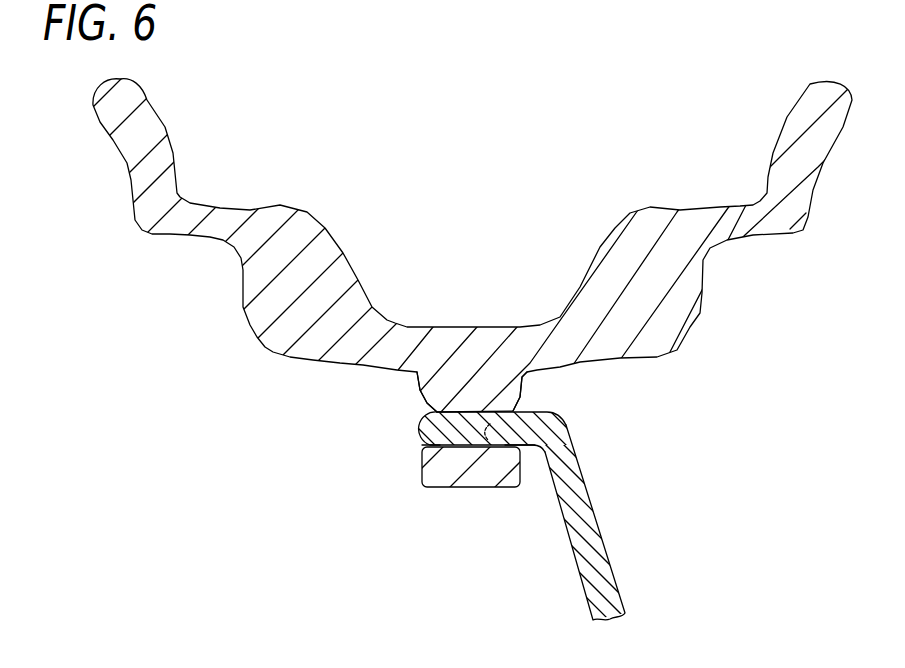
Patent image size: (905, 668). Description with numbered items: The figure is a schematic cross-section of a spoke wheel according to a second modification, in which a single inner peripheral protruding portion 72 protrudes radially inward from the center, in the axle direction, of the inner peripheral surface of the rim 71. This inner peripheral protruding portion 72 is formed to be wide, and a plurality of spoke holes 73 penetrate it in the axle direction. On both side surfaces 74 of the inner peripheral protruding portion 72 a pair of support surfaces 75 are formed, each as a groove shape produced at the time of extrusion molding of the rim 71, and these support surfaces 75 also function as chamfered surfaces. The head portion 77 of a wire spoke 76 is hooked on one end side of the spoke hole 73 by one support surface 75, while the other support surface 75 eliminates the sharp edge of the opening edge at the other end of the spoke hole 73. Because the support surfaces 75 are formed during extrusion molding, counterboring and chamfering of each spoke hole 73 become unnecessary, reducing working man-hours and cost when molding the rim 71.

The rim 71 is at (527, 268).
The inner peripheral protruding portion 72 is at (478, 476).
The spoke hole 73 is at (487, 430).
The side surface 74 is at (415, 380).
The support surface 75 is at (422, 445).
The wire spoke 76 is at (603, 533).
The head portion 77 is at (417, 432).